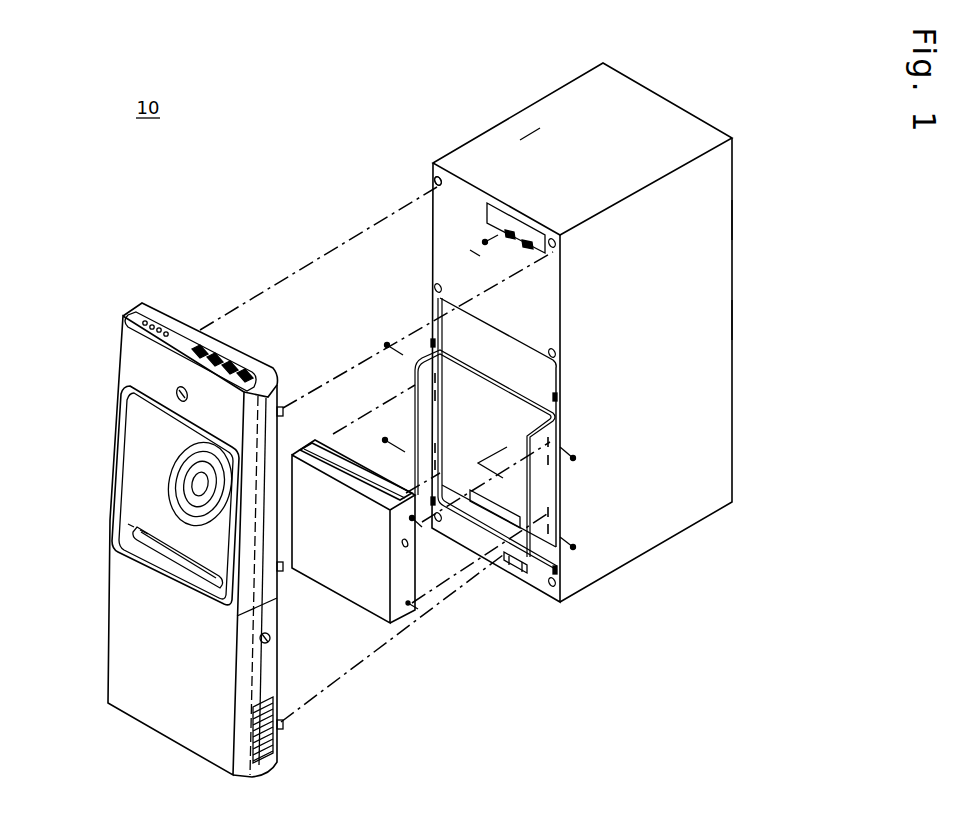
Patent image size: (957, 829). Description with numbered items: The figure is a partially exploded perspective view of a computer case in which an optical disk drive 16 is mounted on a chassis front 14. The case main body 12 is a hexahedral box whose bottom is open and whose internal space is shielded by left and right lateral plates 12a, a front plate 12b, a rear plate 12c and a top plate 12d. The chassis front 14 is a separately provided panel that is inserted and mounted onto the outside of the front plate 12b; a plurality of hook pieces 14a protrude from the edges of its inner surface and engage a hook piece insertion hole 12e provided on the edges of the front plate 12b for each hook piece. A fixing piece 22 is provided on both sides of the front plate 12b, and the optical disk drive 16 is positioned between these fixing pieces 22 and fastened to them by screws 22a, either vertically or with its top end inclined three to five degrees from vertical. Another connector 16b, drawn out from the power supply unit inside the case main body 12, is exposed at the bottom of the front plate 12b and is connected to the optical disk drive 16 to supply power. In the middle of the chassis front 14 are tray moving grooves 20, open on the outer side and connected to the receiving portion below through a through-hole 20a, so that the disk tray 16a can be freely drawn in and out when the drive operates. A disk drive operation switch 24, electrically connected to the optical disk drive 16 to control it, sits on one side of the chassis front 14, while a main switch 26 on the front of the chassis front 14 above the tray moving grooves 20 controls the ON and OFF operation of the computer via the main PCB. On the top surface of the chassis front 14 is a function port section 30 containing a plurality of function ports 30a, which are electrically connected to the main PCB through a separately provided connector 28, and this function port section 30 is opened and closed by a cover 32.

The case main body 12 is at (730, 462).
The lateral plates 12a is at (685, 371).
The front plate 12b is at (455, 245).
The rear plate 12c is at (735, 228).
The top plate 12d is at (498, 135).
The hook piece insertion hole 12e is at (433, 183).
The chassis front 14 is at (168, 681).
The hook pieces 14a is at (285, 578).
The optical disk drive 16 is at (361, 590).
The disk tray 16a is at (331, 448).
The connector 16b is at (503, 570).
The tray moving grooves 20 is at (147, 485).
The through-hole 20a is at (145, 537).
The fixing piece 22 is at (553, 512).
The screws 22a is at (570, 548).
The disk drive operation switch 24 is at (269, 643).
The main switch 26 is at (176, 398).
The connector 28 is at (520, 234).
The function port section 30 is at (176, 337).
The function ports 30a is at (200, 351).
The cover 32 is at (207, 335).